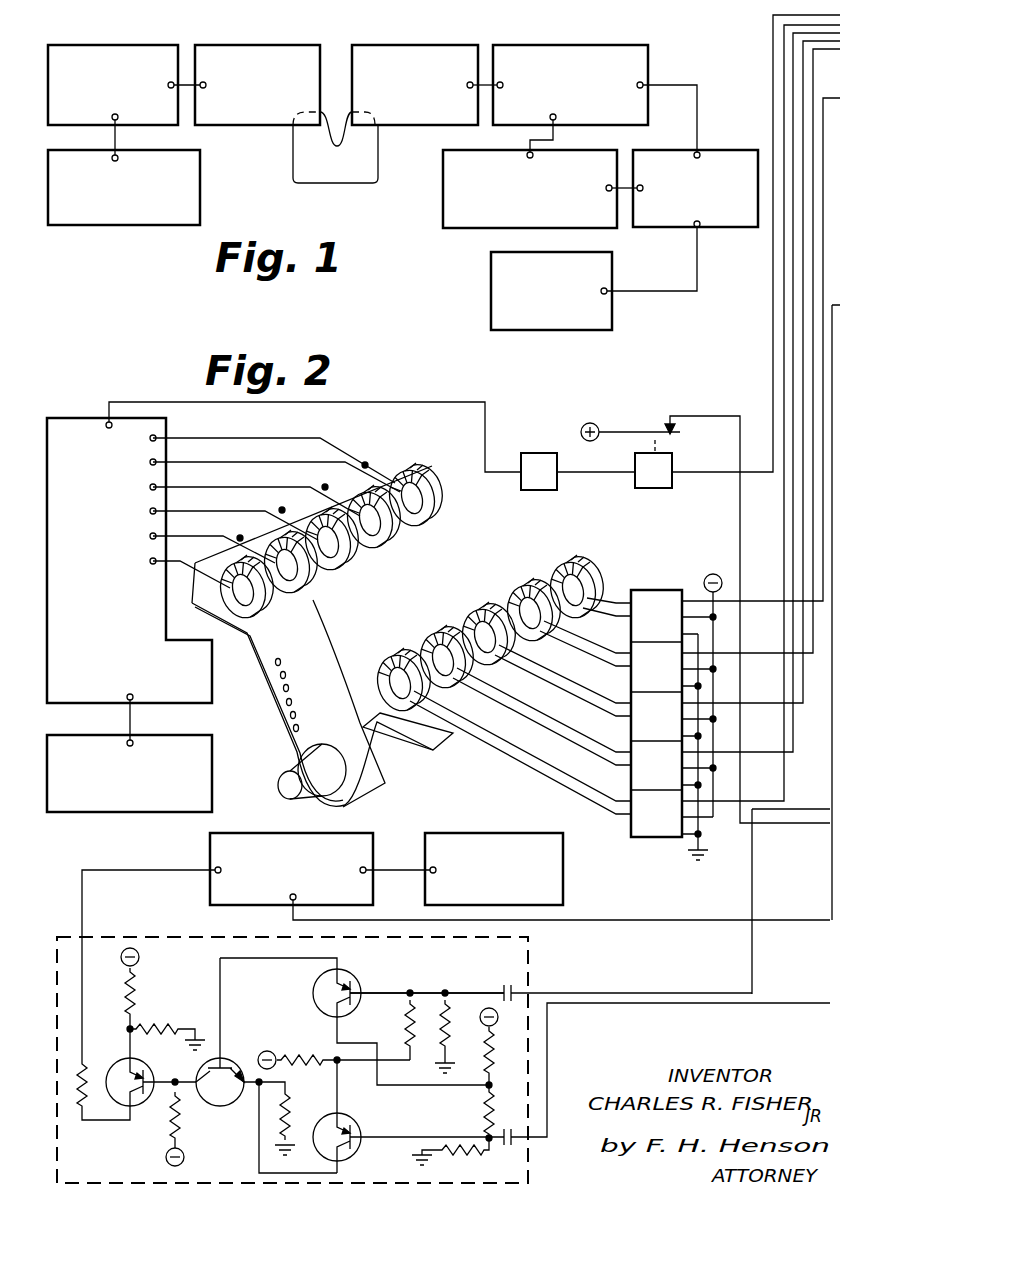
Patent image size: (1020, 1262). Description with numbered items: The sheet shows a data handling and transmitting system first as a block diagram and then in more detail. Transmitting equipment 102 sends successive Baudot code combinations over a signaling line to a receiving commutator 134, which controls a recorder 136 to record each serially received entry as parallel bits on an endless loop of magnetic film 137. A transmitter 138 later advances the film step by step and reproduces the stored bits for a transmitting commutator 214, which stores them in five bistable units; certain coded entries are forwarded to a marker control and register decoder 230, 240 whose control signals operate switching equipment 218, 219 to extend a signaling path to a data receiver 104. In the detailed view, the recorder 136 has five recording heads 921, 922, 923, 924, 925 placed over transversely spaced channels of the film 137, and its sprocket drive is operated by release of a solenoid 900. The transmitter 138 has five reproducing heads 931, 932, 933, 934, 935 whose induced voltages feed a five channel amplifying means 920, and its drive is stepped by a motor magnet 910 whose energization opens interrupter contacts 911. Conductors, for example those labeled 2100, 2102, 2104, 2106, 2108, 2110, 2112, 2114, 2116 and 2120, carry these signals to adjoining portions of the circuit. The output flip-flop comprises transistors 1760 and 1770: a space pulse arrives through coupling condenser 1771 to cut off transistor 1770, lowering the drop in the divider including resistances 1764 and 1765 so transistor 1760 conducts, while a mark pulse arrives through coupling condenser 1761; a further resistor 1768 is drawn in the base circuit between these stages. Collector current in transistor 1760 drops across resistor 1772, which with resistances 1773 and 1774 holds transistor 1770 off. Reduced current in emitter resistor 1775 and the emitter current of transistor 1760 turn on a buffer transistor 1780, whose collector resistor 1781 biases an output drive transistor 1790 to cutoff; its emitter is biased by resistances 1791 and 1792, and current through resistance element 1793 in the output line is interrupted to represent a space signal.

In FIG. 1, the transmitting equipment 102 is at (138, 225).
In FIG. 2, the transmitting equipment 102 is at (65, 815).
In FIG. 1, the data receiver 104 is at (490, 297).
In FIG. 2, the data receiver 104 is at (563, 893).
In FIG. 1, the receiving commutator 134 is at (132, 44).
In FIG. 2, the receiving commutator 134 is at (106, 418).
In FIG. 1, the recorder 136 is at (272, 44).
In FIG. 2, the recorder 136 is at (542, 418).
In FIG. 1, the magnetic film 137 is at (293, 165).
In FIG. 2, the magnetic film 137 is at (285, 716).
In FIG. 1, the transmitter 138 is at (416, 44).
In FIG. 2, the transmitter 138 is at (612, 546).
In FIG. 1, the transmitting commutator 214 is at (586, 44).
In FIG. 1, the switching equipment 218 is at (689, 220).
In FIG. 2, the switching equipment 218 is at (256, 946).
In FIG. 1, the switching equipment 219 is at (730, 228).
In FIG. 2, the switching equipment 219 is at (210, 845).
In FIG. 1, the marker control 230 is at (488, 189).
In FIG. 1, the register decoder 240 is at (443, 200).
In FIG. 2, the solenoid 900 is at (557, 489).
In FIG. 2, the motor magnet 910 is at (672, 487).
In FIG. 2, the interrupter contacts 911 is at (658, 426).
In FIG. 2, the five channel amplifying means 920 is at (673, 838).
In FIG. 2, the recording head 921 is at (433, 512).
In FIG. 2, the recording head 922 is at (401, 539).
In FIG. 2, the recording head 923 is at (346, 567).
In FIG. 2, the recording head 924 is at (307, 588).
In FIG. 2, the recording head 925 is at (248, 633).
In FIG. 2, the reproducing head 931 is at (554, 570).
In FIG. 2, the reproducing head 932 is at (515, 592).
In FIG. 2, the reproducing head 933 is at (480, 616).
In FIG. 2, the reproducing head 934 is at (445, 639).
In FIG. 2, the reproducing head 935 is at (400, 662).
In FIG. 2, the transistor 1760 is at (313, 993).
In FIG. 2, the coupling condenser 1761 is at (510, 984).
In FIG. 2, the resistance 1764 is at (460, 982).
In FIG. 2, the resistance 1765 is at (409, 1014).
In FIG. 2, the resistor 1768 is at (277, 1056).
In FIG. 2, the transistor 1770 is at (344, 1154).
In FIG. 2, the coupling condenser 1771 is at (527, 1140).
In FIG. 2, the resistor 1772 is at (484, 1072).
In FIG. 2, the resistance 1773 is at (484, 1110).
In FIG. 2, the resistance 1774 is at (443, 1148).
In FIG. 2, the emitter resistor 1775 is at (297, 1112).
In FIG. 2, the buffer transistor 1780 is at (224, 1056).
In FIG. 2, the collector resistor 1781 is at (174, 1118).
In FIG. 2, the output drive transistor 1790 is at (120, 1060).
In FIG. 2, the resistance 1791 is at (136, 984).
In FIG. 2, the resistance 1792 is at (148, 1026).
In FIG. 2, the resistance element 1793 is at (80, 1113).
In FIG. 2, the amplifier circuit 2100 is at (554, 1058).
In FIG. 2, the conductor 2102 is at (648, 994).
In FIG. 2, the conductor 2104 is at (662, 920).
In FIG. 2, the lead 2106 is at (767, 810).
In FIG. 2, the lead 2108 is at (767, 760).
In FIG. 2, the lead 2110 is at (788, 708).
In FIG. 2, the lead 2112 is at (788, 658).
In FIG. 2, the lead 2114 is at (788, 608).
In FIG. 2, the lead 2116 is at (754, 470).
In FIG. 2, the lead 2120 is at (674, 420).